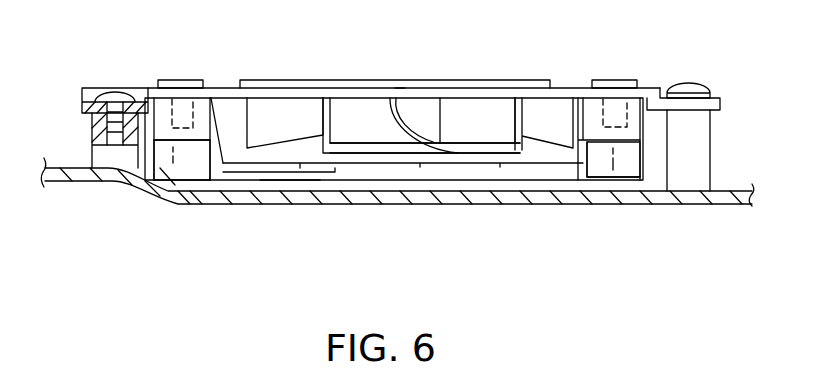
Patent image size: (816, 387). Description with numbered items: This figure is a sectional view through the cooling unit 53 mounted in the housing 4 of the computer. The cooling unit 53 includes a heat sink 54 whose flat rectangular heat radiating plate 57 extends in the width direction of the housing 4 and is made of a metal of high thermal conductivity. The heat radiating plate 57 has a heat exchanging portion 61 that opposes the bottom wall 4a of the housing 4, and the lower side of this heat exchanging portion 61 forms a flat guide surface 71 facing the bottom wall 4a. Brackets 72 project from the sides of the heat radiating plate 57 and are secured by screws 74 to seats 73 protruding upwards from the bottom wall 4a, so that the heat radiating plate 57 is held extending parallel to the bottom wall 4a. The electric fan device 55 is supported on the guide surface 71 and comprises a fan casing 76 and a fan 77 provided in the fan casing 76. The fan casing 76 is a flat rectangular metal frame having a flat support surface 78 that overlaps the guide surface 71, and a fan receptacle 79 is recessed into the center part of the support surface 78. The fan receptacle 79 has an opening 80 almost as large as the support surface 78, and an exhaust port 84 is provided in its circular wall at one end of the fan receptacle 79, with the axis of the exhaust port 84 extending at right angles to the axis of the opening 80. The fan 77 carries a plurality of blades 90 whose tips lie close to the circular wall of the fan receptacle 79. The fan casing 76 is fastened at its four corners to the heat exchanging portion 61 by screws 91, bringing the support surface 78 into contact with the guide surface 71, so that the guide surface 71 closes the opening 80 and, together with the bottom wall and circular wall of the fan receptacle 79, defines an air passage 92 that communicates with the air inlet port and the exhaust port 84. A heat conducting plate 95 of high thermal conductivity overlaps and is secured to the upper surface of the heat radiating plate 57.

The housing 4 is at (49, 185).
The bottom wall 4a is at (452, 196).
The cooling unit 53 is at (563, 80).
The heat sink 54 is at (216, 96).
The electric fan device 55 is at (287, 182).
The heat radiating plate 57 is at (352, 97).
The heat exchanging portion 61 is at (309, 80).
The guide surface 71 is at (431, 104).
The brackets 72 is at (84, 100).
The seats 73 is at (112, 162).
The screws 74 is at (115, 92).
The fan casing 76 is at (222, 172).
The fan 77 is at (483, 116).
The support surface 78 is at (589, 92).
The fan receptacle 79 is at (222, 128).
The opening 80 is at (398, 152).
The exhaust port 84 is at (573, 128).
The blades 90 is at (277, 124).
The screws 91 is at (175, 80).
The air passage 92 is at (315, 150).
The heat conducting plate 95 is at (399, 87).